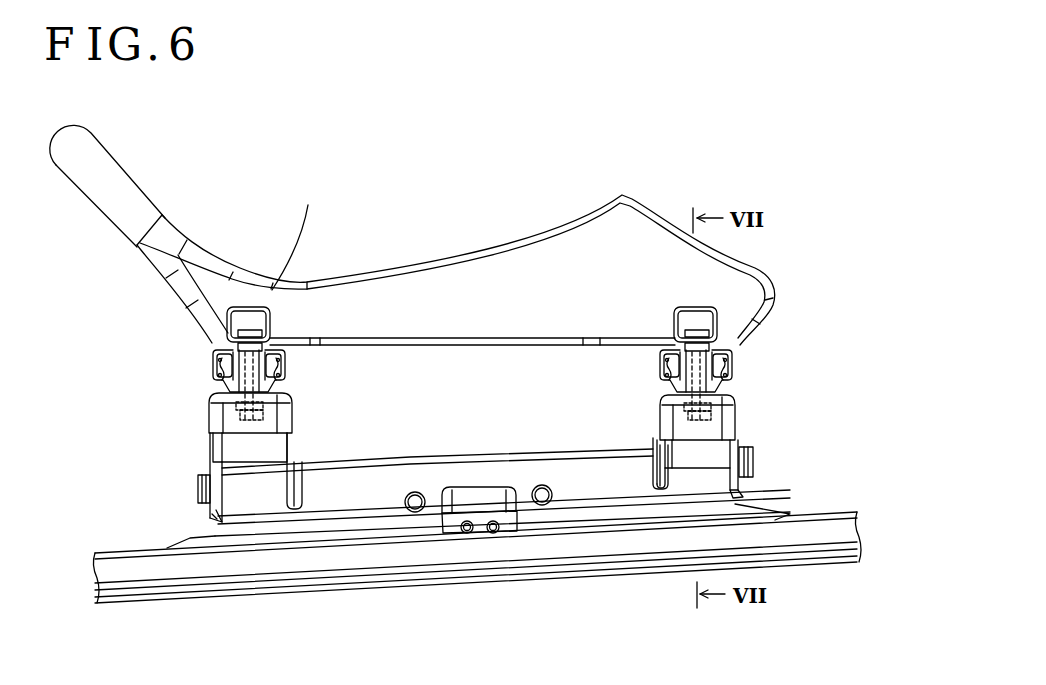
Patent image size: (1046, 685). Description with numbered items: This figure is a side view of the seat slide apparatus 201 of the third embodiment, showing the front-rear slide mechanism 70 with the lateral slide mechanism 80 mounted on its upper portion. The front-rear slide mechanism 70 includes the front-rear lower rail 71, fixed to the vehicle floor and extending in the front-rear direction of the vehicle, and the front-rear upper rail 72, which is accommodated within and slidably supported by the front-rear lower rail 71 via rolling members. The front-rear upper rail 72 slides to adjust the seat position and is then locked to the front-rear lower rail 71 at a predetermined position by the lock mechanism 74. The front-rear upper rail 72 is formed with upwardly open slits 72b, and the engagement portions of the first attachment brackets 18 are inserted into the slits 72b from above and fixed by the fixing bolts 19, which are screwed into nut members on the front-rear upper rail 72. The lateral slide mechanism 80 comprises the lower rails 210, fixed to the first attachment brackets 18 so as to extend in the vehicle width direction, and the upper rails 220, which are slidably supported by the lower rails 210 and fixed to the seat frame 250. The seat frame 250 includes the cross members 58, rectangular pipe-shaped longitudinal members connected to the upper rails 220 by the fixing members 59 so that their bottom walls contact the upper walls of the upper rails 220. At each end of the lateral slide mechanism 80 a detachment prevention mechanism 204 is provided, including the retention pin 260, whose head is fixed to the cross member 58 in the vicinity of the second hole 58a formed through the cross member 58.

The seat slide apparatus 201 is at (522, 140).
The seat frame 250 is at (479, 186).
The upper rail 220 is at (283, 337).
The cross member 58 is at (243, 307).
The second hole 58a is at (817, 274).
The fixing member 59 is at (252, 335).
The lateral slide mechanism 80 is at (461, 372).
The detachment prevention mechanism 204 is at (190, 358).
The lower rail 210 is at (283, 360).
The retention pin 260 is at (215, 388).
The front-rear lower rail 71 is at (420, 580).
The front-rear slide mechanism 70 is at (450, 470).
The front-rear upper rail 72 is at (478, 471).
The slit 72b is at (297, 457).
The lock mechanism 74 is at (477, 483).
The first attachment bracket 18 is at (208, 420).
The fixing bolt 19 is at (195, 488).